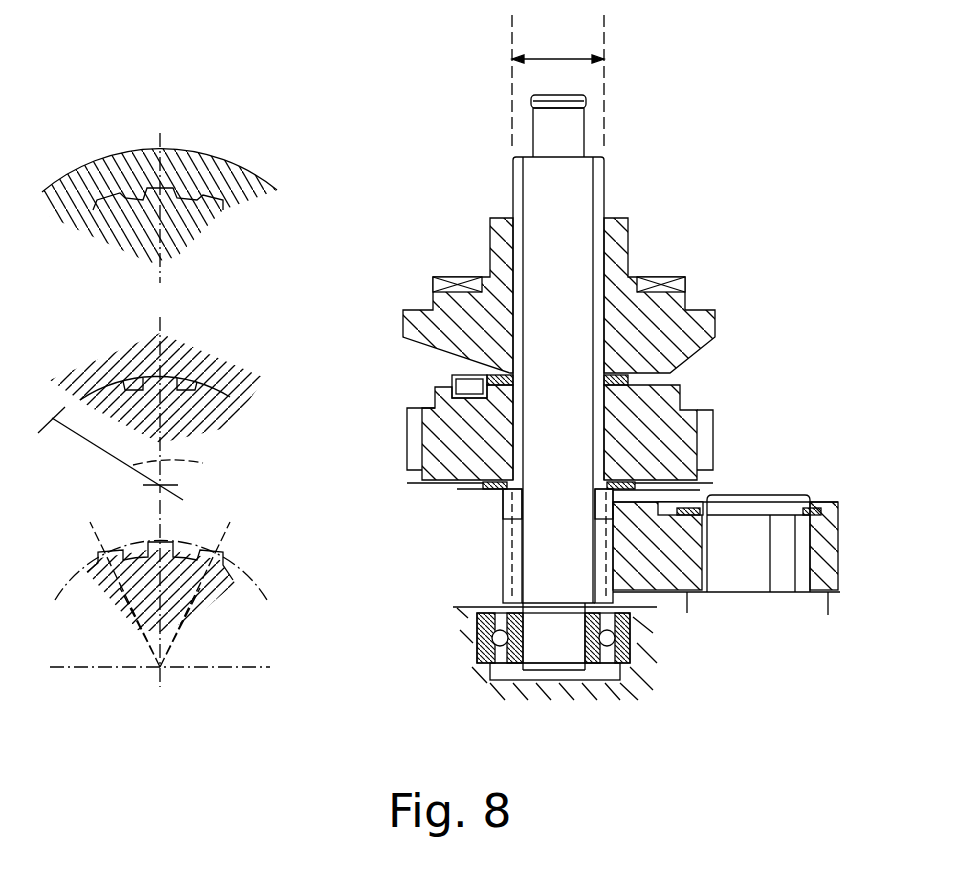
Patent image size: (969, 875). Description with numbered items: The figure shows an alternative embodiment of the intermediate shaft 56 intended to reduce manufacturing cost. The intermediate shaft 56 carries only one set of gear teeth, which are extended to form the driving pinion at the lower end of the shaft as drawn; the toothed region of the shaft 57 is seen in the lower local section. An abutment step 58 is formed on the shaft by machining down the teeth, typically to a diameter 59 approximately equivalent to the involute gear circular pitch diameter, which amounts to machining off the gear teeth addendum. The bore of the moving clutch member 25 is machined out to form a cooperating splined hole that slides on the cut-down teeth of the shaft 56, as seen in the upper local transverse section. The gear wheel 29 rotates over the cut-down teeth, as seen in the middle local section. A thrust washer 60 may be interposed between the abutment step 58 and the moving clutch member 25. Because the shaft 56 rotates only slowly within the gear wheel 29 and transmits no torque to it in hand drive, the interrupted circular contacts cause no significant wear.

The moving clutch member 25 is at (507, 267).
The gear wheel 29 is at (448, 422).
The intermediate shaft 56 is at (542, 195).
The sleeve with teeth 57 is at (500, 578).
The abutment step 58 is at (505, 505).
The diameter 59 is at (549, 58).
The thrust washer 60 is at (503, 488).